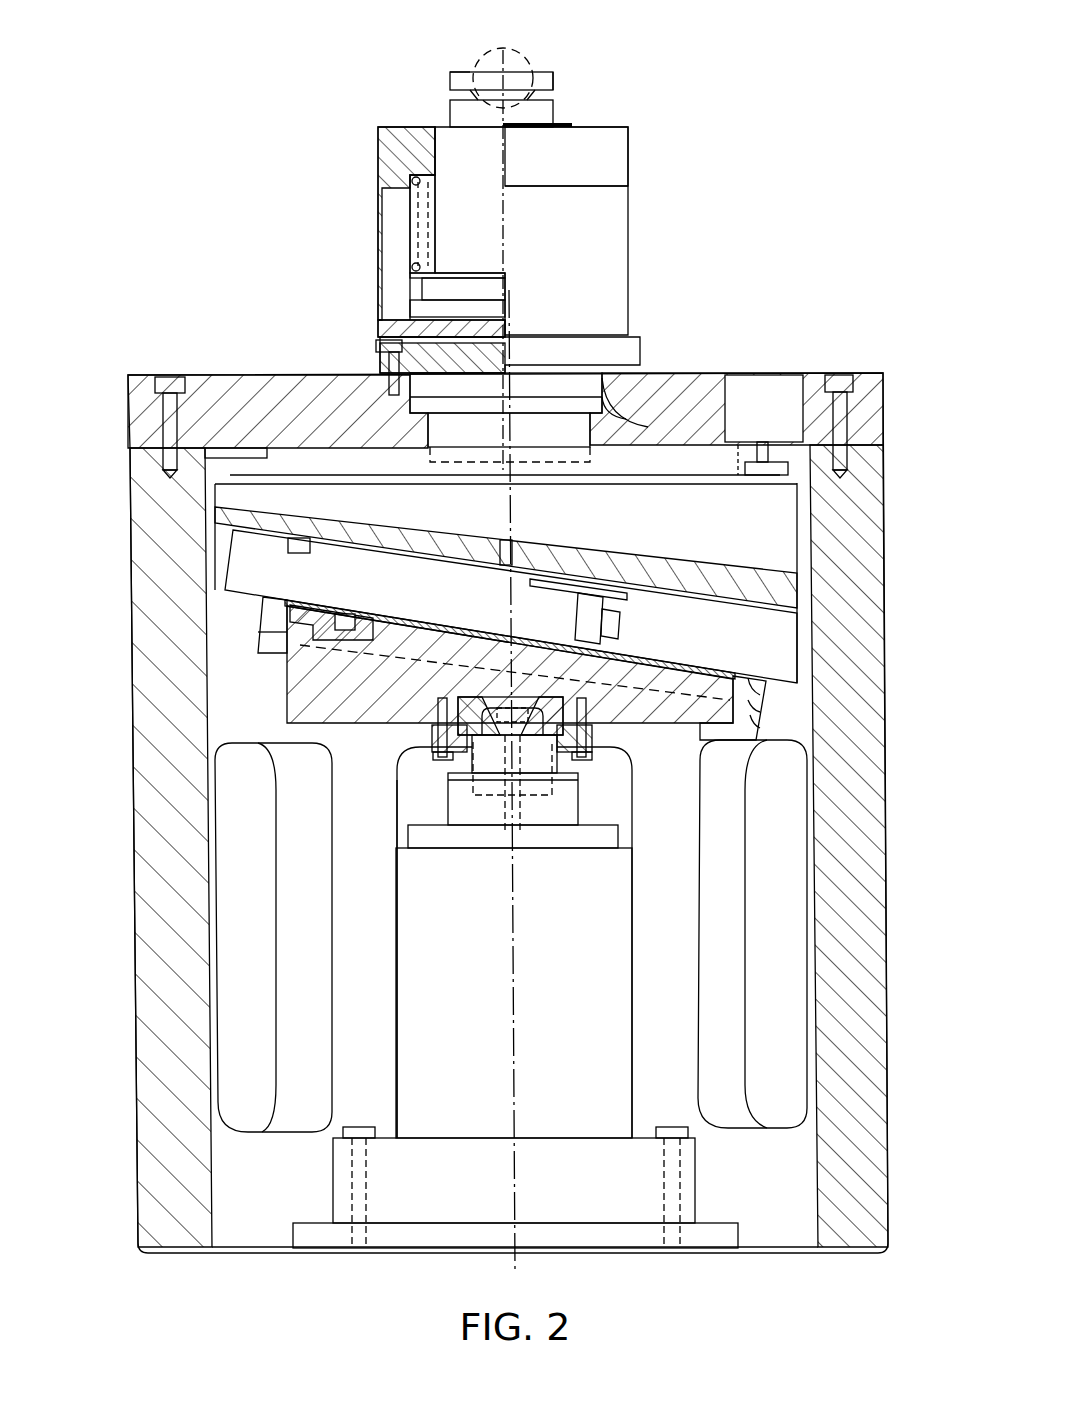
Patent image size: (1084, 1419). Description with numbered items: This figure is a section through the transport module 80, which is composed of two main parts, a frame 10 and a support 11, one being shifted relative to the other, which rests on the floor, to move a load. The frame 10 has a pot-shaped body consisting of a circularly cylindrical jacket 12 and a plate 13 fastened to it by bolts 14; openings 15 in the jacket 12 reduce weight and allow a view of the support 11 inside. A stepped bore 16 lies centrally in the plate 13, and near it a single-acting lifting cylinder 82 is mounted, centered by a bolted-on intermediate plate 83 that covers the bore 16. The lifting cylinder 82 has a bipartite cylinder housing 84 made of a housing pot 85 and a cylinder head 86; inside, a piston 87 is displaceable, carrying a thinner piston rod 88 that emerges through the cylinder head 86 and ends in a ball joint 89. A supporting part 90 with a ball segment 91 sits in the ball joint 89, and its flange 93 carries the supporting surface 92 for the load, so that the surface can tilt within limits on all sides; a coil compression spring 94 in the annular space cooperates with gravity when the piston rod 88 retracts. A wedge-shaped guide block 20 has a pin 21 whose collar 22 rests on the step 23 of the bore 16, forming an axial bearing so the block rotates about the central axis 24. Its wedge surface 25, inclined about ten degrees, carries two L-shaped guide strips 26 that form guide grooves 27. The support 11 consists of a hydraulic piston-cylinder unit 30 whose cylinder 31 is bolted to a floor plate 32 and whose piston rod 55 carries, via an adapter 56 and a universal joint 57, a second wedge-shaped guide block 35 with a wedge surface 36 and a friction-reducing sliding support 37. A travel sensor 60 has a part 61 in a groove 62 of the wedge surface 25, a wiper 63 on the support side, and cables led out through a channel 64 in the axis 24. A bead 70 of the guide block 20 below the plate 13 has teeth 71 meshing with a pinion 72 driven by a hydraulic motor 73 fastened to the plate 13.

The frame 10 is at (895, 855).
The support 11 is at (675, 1066).
The jacket 12 is at (875, 912).
The plate 13 is at (870, 410).
The bolts 14 is at (170, 375).
The openings 15 is at (260, 969).
The stepped bore 16 is at (482, 660).
The wedge-shaped guide block 20 is at (690, 505).
The pin 21 is at (570, 430).
The collar 22 is at (506, 553).
The step 23 is at (598, 372).
The central axis 24 is at (510, 490).
The wedge surface 25 is at (760, 695).
The L-shaped guide strips 26 is at (760, 728).
The guide groove 27 is at (760, 712).
The hydraulic piston-cylinder unit 30 is at (650, 1019).
The cylinder 31 is at (585, 977).
The floor plate 32 is at (718, 1238).
The second wedge-shaped guide block 35 is at (320, 692).
The wedge surface 36 is at (680, 658).
The sliding support 37 is at (712, 672).
The piston rod 55 is at (478, 808).
The adapter 56 is at (540, 758).
The universal joint 57 is at (615, 732).
The travel sensor 60 is at (238, 600).
The part of the travel sensor 61 is at (250, 562).
The groove 62 is at (225, 532).
The wiper 63 is at (294, 633).
The channel 64 is at (515, 560).
The bead 70 is at (352, 455).
The teeth 71 is at (262, 450).
The pinion 72 is at (755, 483).
The hydraulic motor 73 is at (775, 400).
The transport module 80 is at (222, 220).
The single-acting lifting cylinder 82 is at (730, 118).
The intermediate plate 83 is at (378, 338).
The cylinder housing 84 is at (700, 176).
The housing pot 85 is at (386, 215).
The cylinder head 86 is at (392, 138).
The piston 87 is at (480, 300).
The piston rod 88 is at (483, 220).
The ball joint 89 is at (522, 70).
The supporting part 90 is at (580, 71).
The ball segment 91 is at (470, 94).
The supporting surface 92 is at (486, 70).
The flange 93 is at (455, 72).
The coil compression spring 94 is at (422, 182).